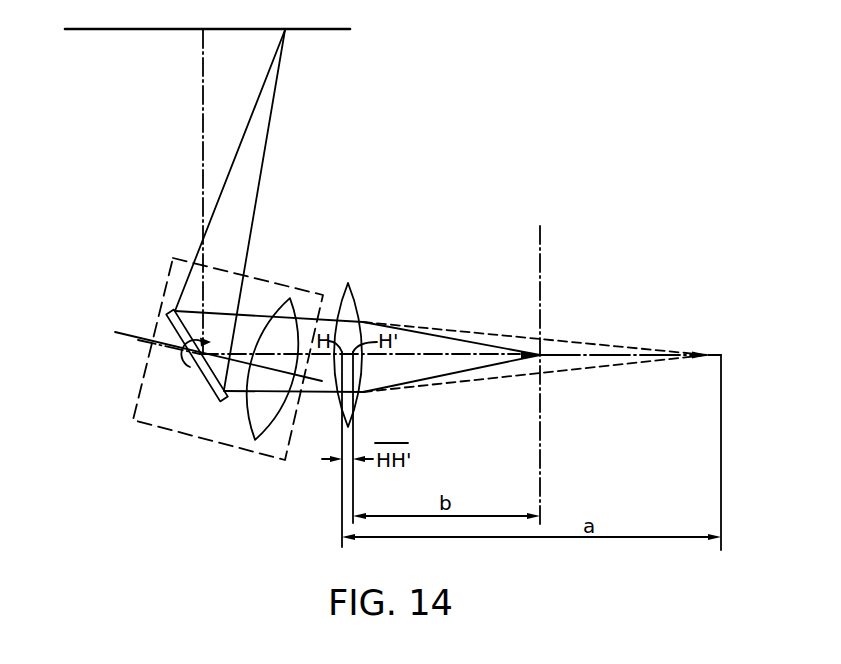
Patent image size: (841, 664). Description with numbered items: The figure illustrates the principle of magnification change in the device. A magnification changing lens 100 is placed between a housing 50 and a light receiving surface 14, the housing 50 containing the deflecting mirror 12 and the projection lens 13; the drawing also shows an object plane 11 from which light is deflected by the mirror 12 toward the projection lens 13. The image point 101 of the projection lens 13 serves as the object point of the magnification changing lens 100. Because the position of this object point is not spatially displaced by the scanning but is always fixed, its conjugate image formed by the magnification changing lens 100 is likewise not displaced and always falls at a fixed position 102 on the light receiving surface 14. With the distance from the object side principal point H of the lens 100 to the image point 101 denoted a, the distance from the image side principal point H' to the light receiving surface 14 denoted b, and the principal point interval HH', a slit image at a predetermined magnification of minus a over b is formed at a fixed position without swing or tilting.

The original (object plane) 11 is at (248, 28).
The deflecting mirror 12 is at (214, 390).
The projection lens 13 is at (253, 427).
The light receiving surface 14 is at (545, 248).
The housing 50 is at (143, 381).
The magnification changing lens 100 is at (356, 295).
The image point 101 is at (722, 355).
The fixed position 102 is at (541, 354).